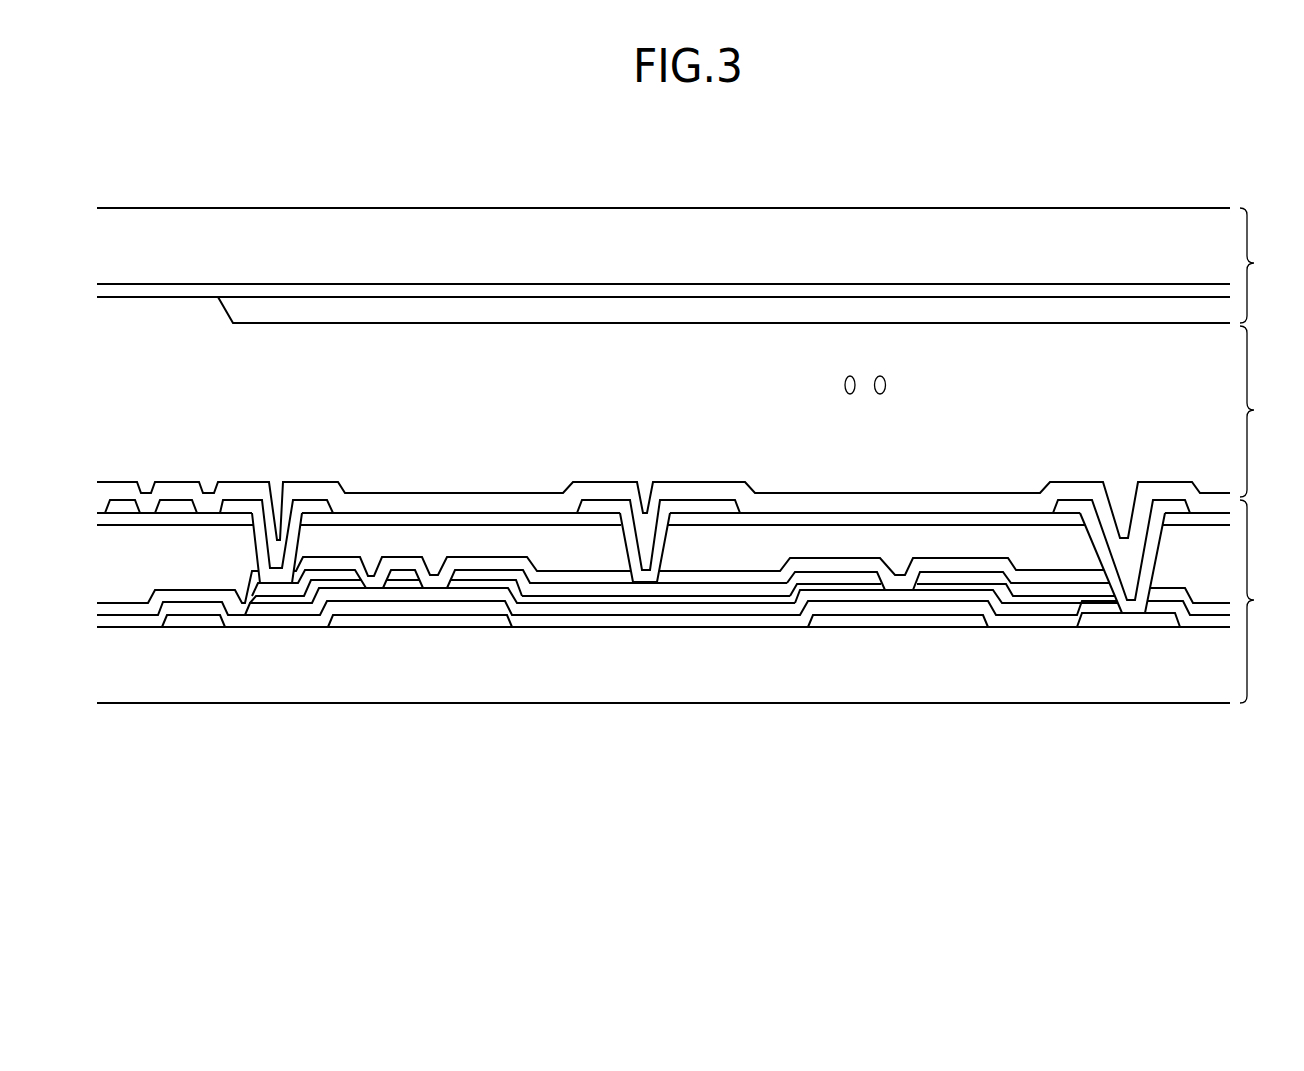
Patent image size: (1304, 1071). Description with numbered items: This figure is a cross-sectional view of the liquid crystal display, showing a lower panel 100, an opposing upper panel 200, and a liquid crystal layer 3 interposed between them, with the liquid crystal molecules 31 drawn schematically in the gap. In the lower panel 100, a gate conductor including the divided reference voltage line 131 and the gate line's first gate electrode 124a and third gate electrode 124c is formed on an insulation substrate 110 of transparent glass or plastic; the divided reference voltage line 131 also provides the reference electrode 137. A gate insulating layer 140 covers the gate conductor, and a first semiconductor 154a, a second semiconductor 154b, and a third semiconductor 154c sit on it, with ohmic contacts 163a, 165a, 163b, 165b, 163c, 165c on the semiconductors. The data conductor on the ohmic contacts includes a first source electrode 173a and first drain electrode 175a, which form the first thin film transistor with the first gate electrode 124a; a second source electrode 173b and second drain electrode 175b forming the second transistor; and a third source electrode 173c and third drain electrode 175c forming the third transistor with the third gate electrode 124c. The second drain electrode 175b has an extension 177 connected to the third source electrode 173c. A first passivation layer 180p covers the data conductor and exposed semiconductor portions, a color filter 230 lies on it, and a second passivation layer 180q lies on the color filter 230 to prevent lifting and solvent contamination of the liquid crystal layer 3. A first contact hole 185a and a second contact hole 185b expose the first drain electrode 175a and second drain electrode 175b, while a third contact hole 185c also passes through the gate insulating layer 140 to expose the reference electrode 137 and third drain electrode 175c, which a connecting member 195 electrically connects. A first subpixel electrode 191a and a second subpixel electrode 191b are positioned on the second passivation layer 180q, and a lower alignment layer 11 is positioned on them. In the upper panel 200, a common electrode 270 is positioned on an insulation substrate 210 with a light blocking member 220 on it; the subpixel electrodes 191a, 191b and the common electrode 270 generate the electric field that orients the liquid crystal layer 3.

The liquid crystal layer 3 is at (1254, 411).
The lower alignment layer 11 is at (542, 505).
The liquid crystal molecules 31 is at (888, 385).
The lower panel 100 is at (1265, 601).
The insulation substrate 110 is at (762, 680).
The first gate electrode 124a is at (367, 622).
The third gate electrode 124c is at (880, 622).
The divided reference voltage line 131 is at (192, 620).
The reference electrode 137 is at (1122, 622).
The gate insulating layer 140 is at (641, 618).
The first semiconductor 154a is at (350, 595).
The second semiconductor 154b is at (470, 592).
The third semiconductor 154c is at (926, 594).
The ohmic contact 163a is at (420, 585).
The ohmic contact 163b is at (448, 585).
The ohmic contact 163c is at (854, 588).
The ohmic contact 165a is at (258, 597).
The ohmic contact 165b is at (496, 585).
The ohmic contact 165c is at (963, 588).
The first source electrode 173a is at (378, 576).
The second source electrode 173b is at (425, 578).
The third source electrode 173c is at (831, 576).
The first drain electrode 175a is at (283, 585).
The second drain electrode 175b is at (490, 588).
The third drain electrode 175c is at (946, 576).
The extension 177 is at (707, 587).
The first passivation layer 180p is at (125, 608).
The second passivation layer 180q is at (1207, 518).
The first contact hole 185a is at (262, 542).
The second contact hole 185b is at (627, 542).
The third contact hole 185c is at (1088, 541).
The first subpixel electrode 191a is at (236, 505).
The second subpixel electrode 191b is at (597, 505).
The connecting member 195 is at (1164, 505).
The upper panel 200 is at (1265, 265).
The insulation substrate 210 is at (713, 227).
The light blocking member 220 is at (948, 314).
The color filter 230 is at (1025, 537).
The common electrode 270 is at (829, 291).